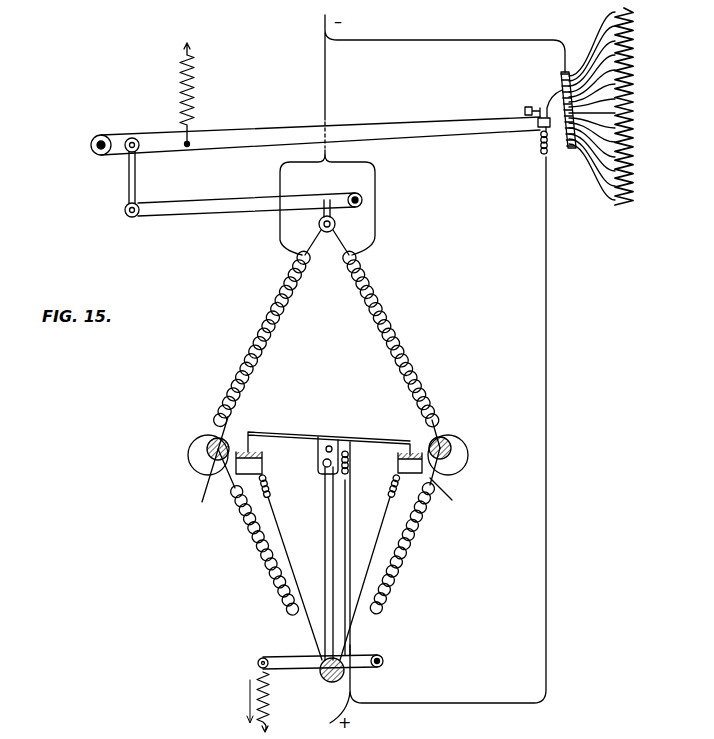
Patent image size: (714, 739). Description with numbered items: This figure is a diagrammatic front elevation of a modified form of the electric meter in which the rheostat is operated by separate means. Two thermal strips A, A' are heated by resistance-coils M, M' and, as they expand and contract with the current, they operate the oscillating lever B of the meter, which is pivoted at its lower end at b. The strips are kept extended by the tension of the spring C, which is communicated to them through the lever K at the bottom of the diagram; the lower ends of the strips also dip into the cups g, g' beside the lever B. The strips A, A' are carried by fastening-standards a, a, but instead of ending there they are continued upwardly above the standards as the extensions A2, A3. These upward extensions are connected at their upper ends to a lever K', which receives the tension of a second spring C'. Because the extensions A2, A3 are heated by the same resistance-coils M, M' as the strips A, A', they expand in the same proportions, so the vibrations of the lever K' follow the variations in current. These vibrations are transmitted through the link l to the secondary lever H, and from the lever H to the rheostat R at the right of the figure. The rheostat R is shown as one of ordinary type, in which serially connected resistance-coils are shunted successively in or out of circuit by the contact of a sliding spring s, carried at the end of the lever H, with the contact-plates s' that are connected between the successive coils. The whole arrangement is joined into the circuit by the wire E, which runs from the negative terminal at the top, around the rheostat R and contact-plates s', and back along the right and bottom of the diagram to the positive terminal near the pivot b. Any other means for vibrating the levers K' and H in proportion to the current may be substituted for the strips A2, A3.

The circuit wire E is at (445, 359).
The spring C' is at (197, 95).
The secondary lever H is at (320, 131).
The link l is at (135, 177).
The lever K' is at (250, 198).
The upward extension of thermal strip A2 is at (312, 250).
The upward extension of thermal strip A3 is at (373, 306).
The thermal strip A is at (208, 468).
The thermal strip A' is at (448, 467).
The fastening-standard a is at (329, 455).
The mercury cup g is at (255, 472).
The mercury cup g' is at (401, 475).
The oscillating lever B is at (328, 548).
The resistance-coil M is at (265, 550).
The resistance-coil M' is at (402, 548).
The lever K is at (320, 674).
The pivot b is at (328, 682).
The spring C is at (265, 702).
The sliding spring s is at (558, 110).
The contact-plates s' is at (557, 151).
The rheostat R is at (609, 106).